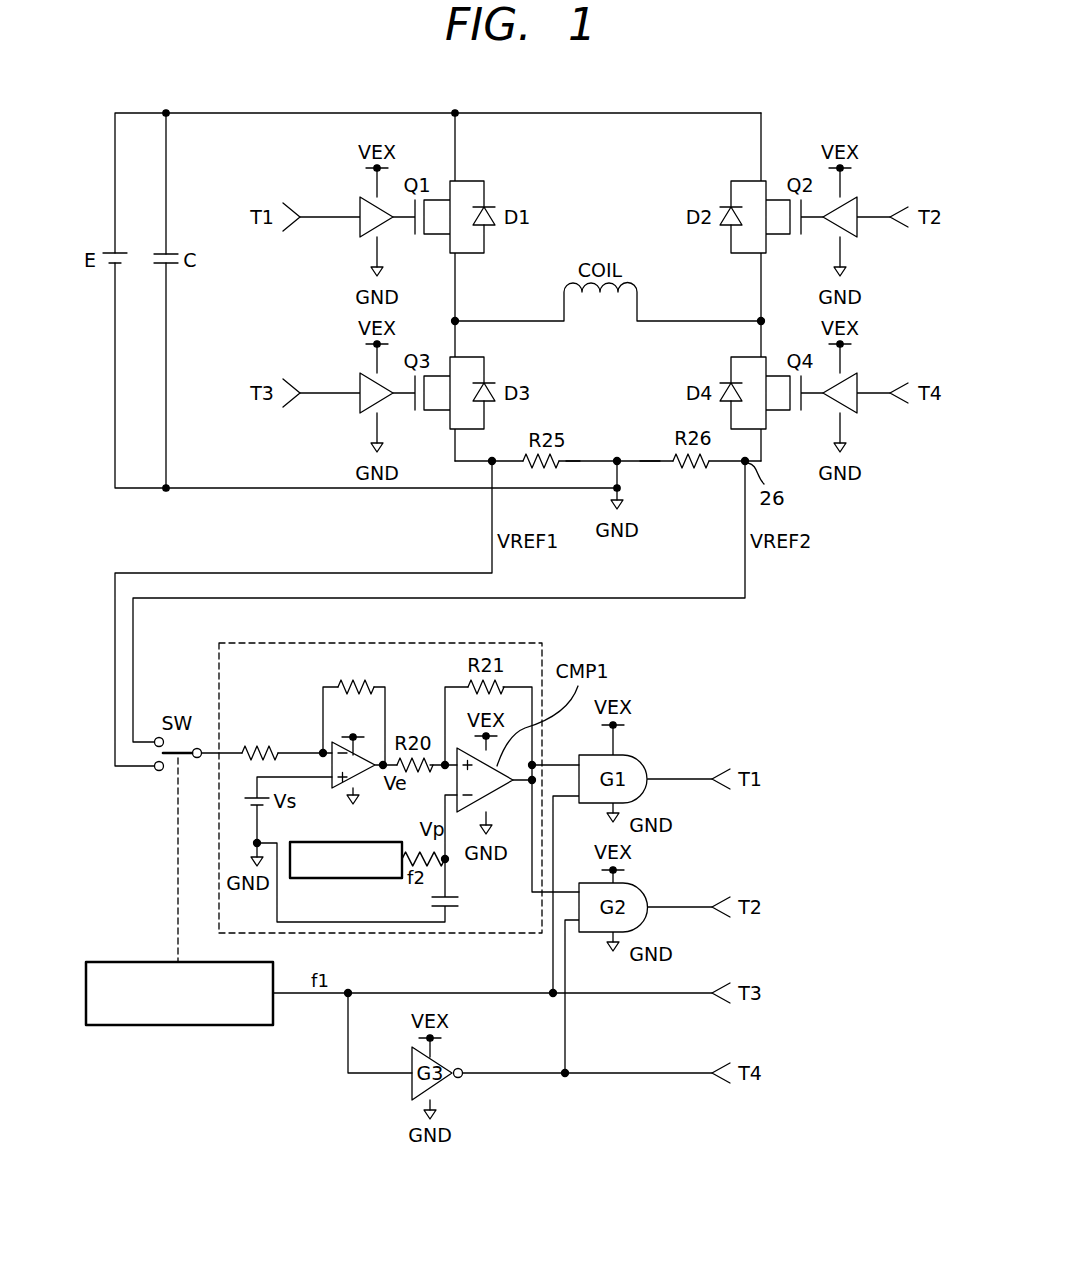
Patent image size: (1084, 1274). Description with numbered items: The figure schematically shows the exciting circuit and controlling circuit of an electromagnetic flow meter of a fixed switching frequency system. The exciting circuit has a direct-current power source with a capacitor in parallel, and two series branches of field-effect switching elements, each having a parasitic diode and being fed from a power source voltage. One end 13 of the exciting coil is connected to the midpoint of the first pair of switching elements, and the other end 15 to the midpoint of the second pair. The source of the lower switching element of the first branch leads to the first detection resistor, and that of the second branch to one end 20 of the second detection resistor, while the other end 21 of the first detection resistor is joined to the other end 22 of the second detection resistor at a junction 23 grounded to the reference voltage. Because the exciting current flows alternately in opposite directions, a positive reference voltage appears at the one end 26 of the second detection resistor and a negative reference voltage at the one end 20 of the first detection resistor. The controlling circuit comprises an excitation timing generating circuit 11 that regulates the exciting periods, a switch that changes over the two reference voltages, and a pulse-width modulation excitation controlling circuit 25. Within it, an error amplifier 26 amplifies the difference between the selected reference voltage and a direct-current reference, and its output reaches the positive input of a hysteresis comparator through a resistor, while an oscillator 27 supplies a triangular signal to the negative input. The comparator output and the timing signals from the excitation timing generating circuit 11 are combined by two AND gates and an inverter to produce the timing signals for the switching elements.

The excitation timing generating circuit 11 is at (139, 1026).
The one end of exciting coil 13 is at (458, 319).
The other end of exciting coil 15 is at (764, 319).
The one end of first detection resistor 20 is at (494, 459).
The other end of first detection resistor 21 is at (573, 459).
The other end of second detection resistor 22 is at (648, 463).
The ground connection point 23 is at (619, 459).
The pulse-width modulation excitation controlling circuit 25 is at (453, 643).
The error amplifier 26 is at (337, 791).
The oscillator 27 is at (338, 879).